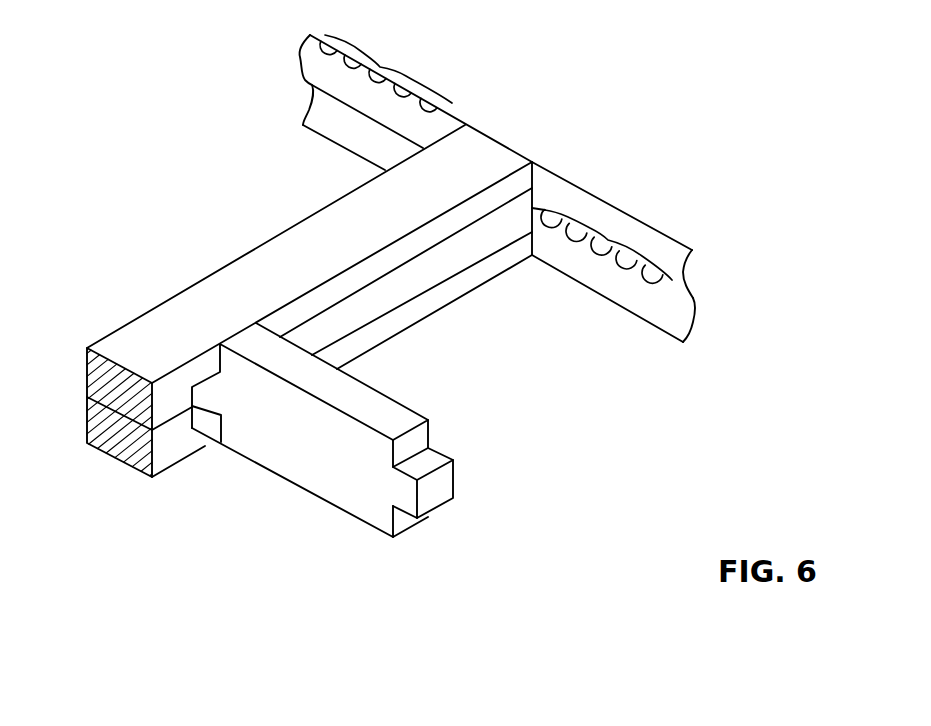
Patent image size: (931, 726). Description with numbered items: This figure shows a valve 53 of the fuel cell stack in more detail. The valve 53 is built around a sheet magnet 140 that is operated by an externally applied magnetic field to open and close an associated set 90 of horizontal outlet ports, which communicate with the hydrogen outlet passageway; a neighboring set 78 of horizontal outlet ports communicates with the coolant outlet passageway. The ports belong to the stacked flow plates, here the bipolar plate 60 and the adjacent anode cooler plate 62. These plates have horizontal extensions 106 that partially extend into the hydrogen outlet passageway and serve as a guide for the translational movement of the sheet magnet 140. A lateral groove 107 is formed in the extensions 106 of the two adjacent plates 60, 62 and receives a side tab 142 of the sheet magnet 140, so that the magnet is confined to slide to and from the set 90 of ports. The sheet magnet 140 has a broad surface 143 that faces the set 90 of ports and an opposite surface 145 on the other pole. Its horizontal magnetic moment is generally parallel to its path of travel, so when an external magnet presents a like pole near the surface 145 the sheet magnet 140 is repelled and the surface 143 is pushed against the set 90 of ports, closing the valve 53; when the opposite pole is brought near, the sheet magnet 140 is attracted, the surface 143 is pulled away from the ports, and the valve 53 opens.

The valve 53 is at (692, 396).
The bipolar plate 60 is at (693, 298).
The anode cooler plate 62 is at (672, 258).
The set of horizontal outlet ports 78 is at (383, 65).
The set of horizontal outlet ports 90 is at (608, 238).
The horizontal extension 106 is at (123, 445).
The lateral groove 107 is at (196, 425).
The sheet magnet 140 is at (327, 505).
The side tab 142 is at (440, 487).
The broad surface 143 is at (377, 385).
The opposite surface 145 is at (337, 470).